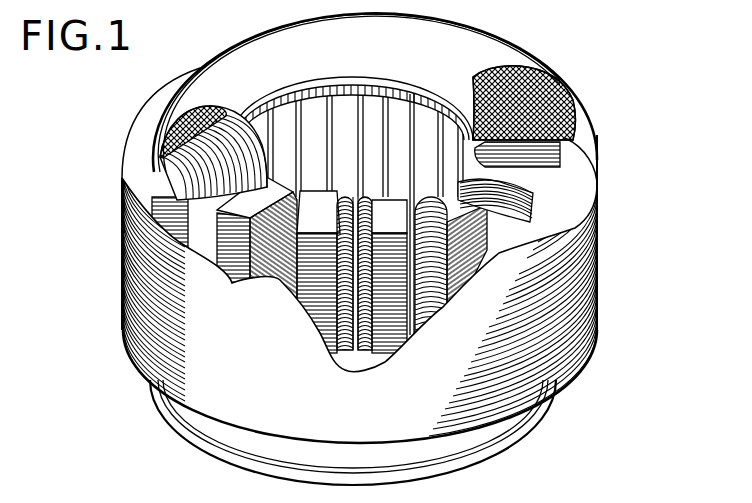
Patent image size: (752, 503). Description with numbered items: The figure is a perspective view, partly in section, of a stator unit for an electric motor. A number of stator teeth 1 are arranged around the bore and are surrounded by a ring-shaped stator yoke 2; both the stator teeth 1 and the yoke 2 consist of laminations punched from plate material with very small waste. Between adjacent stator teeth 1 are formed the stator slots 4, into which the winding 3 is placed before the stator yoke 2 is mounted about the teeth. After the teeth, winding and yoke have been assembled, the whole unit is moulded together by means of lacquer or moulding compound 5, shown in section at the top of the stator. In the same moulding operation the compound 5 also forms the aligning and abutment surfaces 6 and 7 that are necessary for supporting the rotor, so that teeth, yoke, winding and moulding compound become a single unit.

The stator teeth 1 is at (533, 181).
The ring-shaped stator yoke 2 is at (549, 213).
The winding 3 is at (200, 164).
The stator slots 4 is at (505, 215).
The moulding compound 5 is at (566, 112).
The aligning and abutment surface 6 is at (422, 97).
The aligning and abutment surface 7 is at (266, 106).